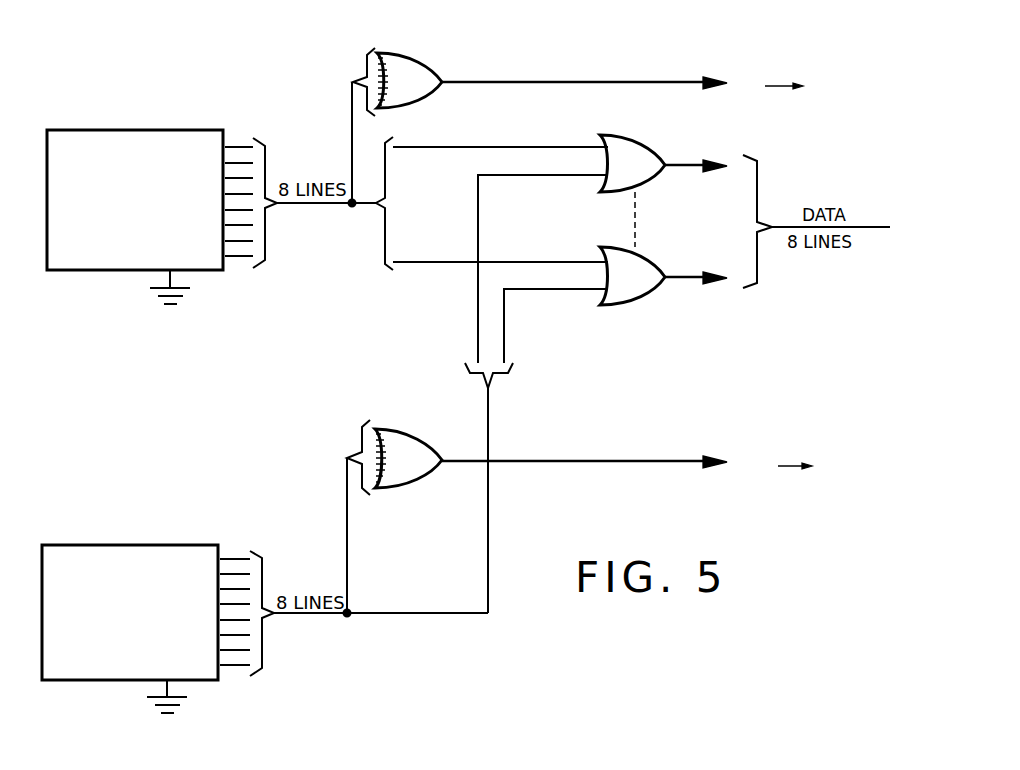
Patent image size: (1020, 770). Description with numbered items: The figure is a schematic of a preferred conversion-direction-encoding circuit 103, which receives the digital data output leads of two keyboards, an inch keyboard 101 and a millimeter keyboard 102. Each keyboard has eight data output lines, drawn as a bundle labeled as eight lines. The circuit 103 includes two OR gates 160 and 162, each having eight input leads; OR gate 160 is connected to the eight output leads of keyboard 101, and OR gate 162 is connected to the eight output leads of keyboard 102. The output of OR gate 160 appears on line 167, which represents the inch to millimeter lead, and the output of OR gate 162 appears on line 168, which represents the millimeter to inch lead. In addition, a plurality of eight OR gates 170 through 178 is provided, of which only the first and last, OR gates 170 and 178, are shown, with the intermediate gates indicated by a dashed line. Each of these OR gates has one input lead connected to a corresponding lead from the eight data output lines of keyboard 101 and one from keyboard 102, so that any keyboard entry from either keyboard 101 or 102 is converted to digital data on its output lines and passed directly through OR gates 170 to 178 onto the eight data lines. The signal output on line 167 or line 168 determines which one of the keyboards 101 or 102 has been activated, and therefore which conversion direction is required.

The keyboard 101 is at (108, 128).
The keyboard 102 is at (108, 545).
The conversion-direction-encoding circuit 103 is at (270, 390).
The OR gate 160 is at (403, 61).
The OR gate 162 is at (396, 432).
The line 167 is at (559, 82).
The line 168 is at (620, 461).
The OR gate 170 is at (647, 144).
The OR gate 178 is at (647, 268).